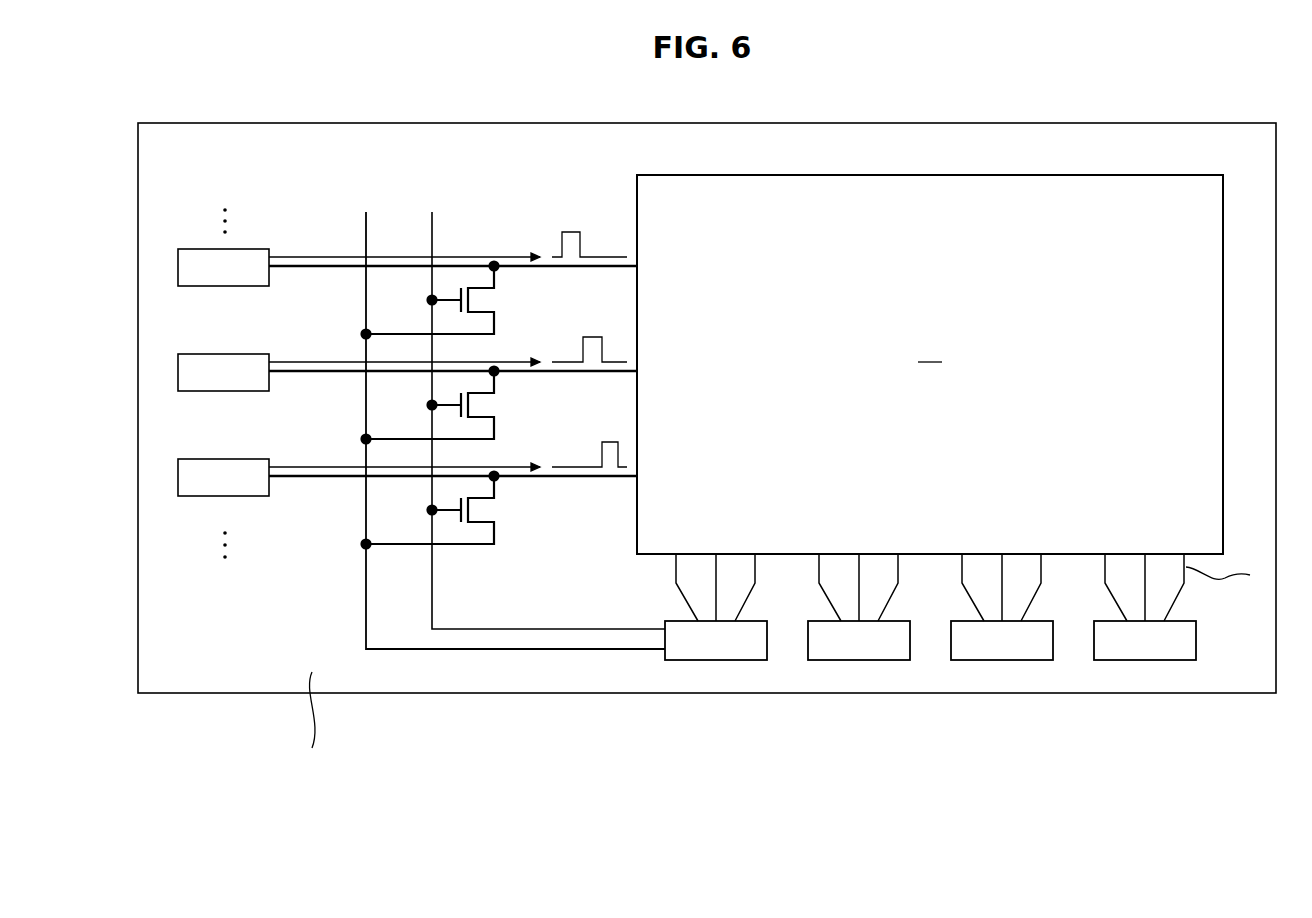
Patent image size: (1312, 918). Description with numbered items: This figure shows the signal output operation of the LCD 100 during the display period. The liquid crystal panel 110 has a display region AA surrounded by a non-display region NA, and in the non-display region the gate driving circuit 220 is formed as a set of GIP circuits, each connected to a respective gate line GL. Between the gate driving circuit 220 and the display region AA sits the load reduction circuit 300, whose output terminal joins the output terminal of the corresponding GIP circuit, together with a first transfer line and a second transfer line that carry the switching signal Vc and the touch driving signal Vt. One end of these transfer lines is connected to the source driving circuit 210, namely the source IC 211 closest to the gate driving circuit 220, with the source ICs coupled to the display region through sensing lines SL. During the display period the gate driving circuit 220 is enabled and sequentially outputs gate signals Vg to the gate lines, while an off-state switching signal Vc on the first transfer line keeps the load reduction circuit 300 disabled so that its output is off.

The LCD 100 is at (731, 878).
The liquid crystal panel 110 is at (1196, 695).
The source driving circuit 210 is at (1143, 661).
The source IC 211 is at (1160, 655).
The gate driving circuit 220 is at (185, 176).
The load reduction circuit 300 is at (472, 284).